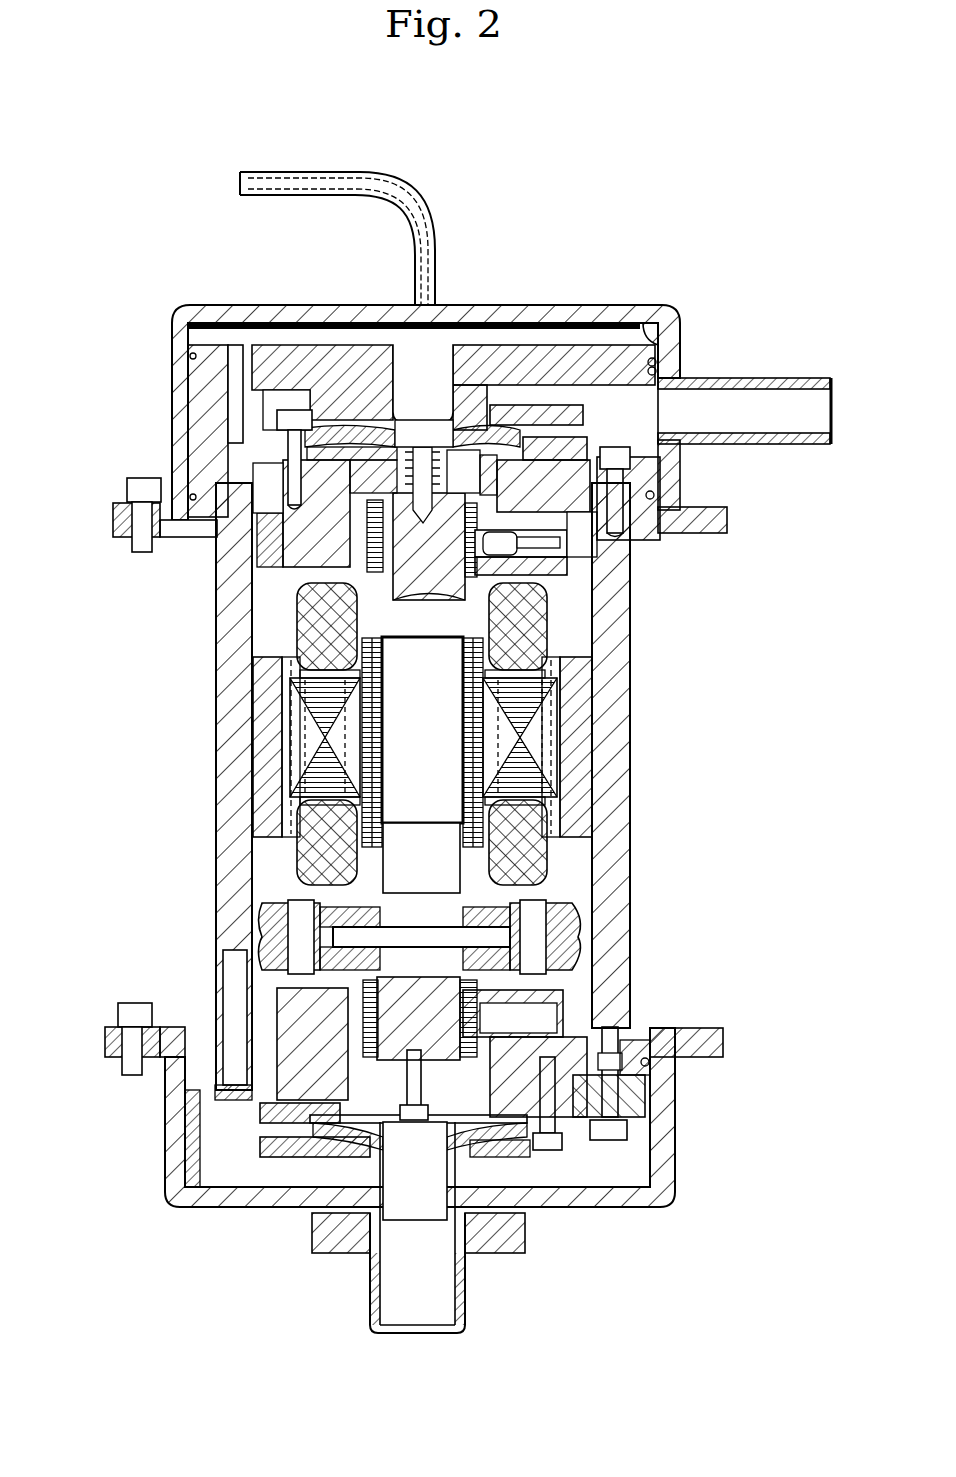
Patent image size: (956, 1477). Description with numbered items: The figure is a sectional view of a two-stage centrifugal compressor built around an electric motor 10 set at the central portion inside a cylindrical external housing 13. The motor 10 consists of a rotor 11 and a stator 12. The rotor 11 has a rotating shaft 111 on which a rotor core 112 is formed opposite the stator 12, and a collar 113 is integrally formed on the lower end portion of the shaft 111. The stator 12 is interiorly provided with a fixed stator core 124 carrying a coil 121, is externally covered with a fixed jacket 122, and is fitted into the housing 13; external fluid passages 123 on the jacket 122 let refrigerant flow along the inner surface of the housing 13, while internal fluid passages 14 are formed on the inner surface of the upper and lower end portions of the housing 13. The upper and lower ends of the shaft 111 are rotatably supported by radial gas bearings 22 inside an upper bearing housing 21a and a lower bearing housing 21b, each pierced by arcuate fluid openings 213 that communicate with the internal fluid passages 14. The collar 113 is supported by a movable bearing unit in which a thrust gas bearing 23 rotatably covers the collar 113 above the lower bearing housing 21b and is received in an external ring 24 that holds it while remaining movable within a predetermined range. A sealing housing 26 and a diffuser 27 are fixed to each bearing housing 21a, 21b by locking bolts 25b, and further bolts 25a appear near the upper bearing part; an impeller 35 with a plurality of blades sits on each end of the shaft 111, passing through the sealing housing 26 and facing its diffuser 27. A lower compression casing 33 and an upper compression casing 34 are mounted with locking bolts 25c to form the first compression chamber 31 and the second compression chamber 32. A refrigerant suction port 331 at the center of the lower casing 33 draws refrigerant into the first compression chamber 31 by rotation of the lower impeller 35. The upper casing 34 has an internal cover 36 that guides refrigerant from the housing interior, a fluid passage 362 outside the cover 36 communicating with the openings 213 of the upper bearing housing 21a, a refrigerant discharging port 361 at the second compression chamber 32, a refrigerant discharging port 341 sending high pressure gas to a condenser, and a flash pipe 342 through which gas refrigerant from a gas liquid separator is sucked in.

The electric motor 10 is at (760, 633).
The rotor 11 is at (715, 612).
The rotating shaft 111 is at (500, 605).
The rotor core 112 is at (552, 670).
The collar 113 is at (320, 895).
The stator 12 is at (715, 675).
The coil 121 is at (605, 746).
The fixed jacket 122 is at (562, 742).
The external fluid passages 123 is at (590, 845).
The fixed stator core 124 is at (572, 706).
The external housing 13 is at (612, 828).
The internal fluid passages 14 is at (237, 1052).
The upper bearing housing 21a is at (293, 540).
The lower bearing housing 21b is at (222, 1085).
The arcuate fluid openings 213 is at (237, 1190).
The radial gas bearings 22 is at (350, 535).
The thrust gas bearing 23 is at (280, 977).
The external ring 24 is at (580, 912).
The bolt 25a is at (615, 460).
The locking bolts 25b is at (295, 458).
The locking bolts 25c is at (142, 493).
The sealing housing 26 is at (243, 462).
The diffuser 27 is at (345, 390).
The first compression chamber 31 is at (640, 1160).
The second compression chamber 32 is at (520, 398).
The lower compression casing 33 is at (662, 1210).
The refrigerant suction port 331 is at (465, 1300).
The upper compression casing 34 is at (592, 322).
The refrigerant discharging port 341 is at (775, 380).
The flash pipe 342 is at (432, 218).
The impeller 35 is at (448, 428).
The internal cover 36 is at (205, 398).
The refrigerant discharging port 361 is at (663, 378).
The fluid passage 362 is at (237, 367).